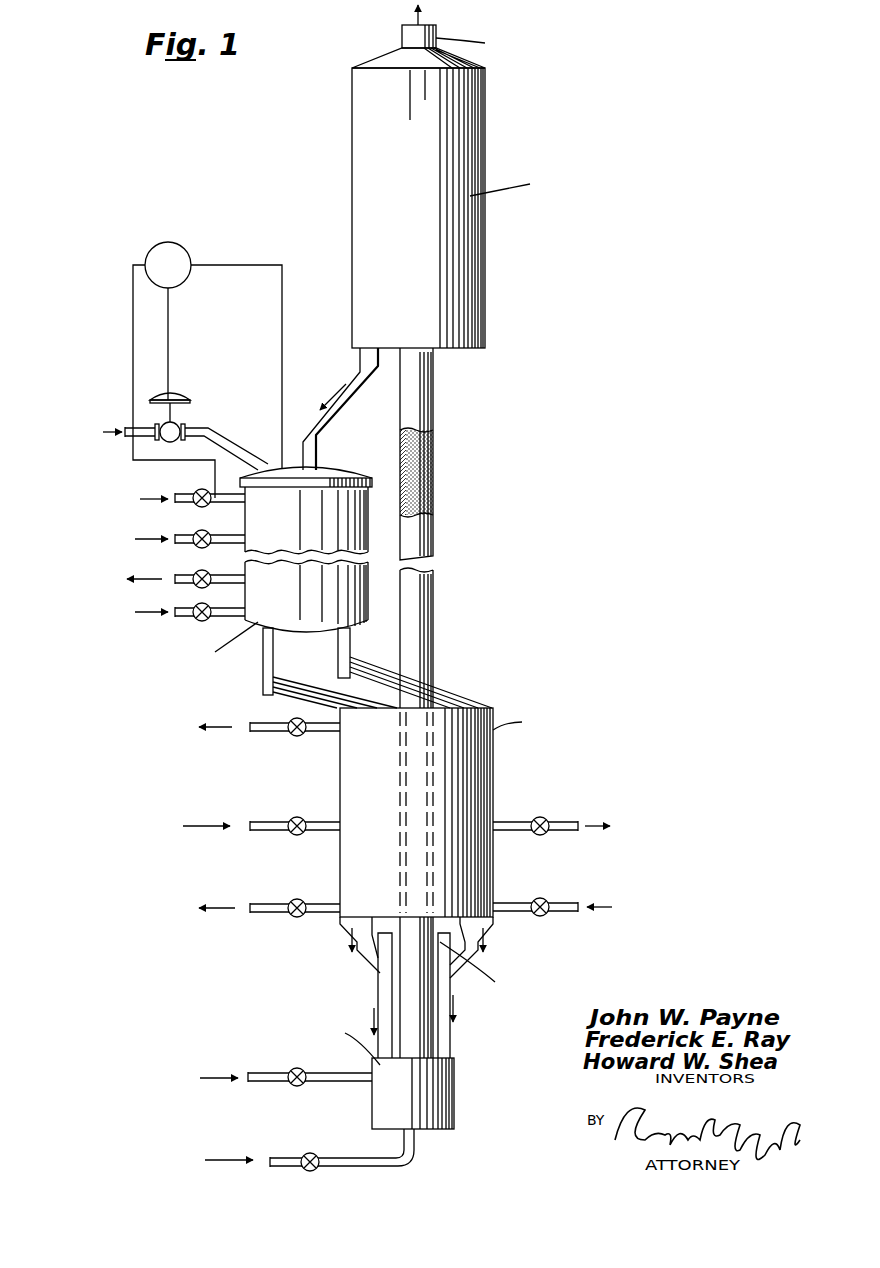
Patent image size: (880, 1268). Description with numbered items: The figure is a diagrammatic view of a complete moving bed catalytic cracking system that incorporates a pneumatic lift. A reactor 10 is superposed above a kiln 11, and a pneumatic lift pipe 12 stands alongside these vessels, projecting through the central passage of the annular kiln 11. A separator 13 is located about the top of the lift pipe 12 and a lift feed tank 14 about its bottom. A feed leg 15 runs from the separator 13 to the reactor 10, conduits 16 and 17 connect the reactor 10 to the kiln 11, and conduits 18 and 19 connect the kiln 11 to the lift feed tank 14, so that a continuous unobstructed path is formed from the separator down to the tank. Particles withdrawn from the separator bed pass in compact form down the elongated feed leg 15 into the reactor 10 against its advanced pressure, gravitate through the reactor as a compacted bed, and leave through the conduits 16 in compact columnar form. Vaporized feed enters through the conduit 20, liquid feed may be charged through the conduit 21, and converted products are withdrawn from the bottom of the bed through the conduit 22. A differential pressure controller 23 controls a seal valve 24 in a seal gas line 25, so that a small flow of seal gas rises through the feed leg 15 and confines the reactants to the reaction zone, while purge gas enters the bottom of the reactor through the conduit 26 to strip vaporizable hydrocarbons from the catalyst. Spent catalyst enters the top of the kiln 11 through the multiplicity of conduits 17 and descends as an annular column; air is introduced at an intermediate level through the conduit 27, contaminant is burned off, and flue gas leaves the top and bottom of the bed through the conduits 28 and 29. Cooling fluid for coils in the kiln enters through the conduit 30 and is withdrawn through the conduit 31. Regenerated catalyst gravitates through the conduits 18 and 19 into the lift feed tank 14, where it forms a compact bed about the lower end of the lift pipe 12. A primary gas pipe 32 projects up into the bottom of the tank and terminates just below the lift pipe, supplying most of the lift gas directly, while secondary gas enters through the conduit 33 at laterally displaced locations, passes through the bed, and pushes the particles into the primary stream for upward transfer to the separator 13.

The reactor 10 is at (247, 566).
The kiln 11 is at (478, 781).
The pneumatic lift pipe 12 is at (415, 604).
The separator 13 is at (462, 314).
The lift feed tank 14 is at (440, 1110).
The feed leg 15 is at (322, 428).
The conduits 16 is at (262, 663).
The conduits 17 is at (287, 688).
The conduits 18 is at (373, 962).
The conduits 19 is at (378, 998).
The conduit 20 is at (185, 504).
The conduit 21 is at (183, 543).
The conduit 22 is at (187, 584).
The differential pressure controller 23 is at (176, 242).
The seal valve 24 is at (188, 403).
The seal gas line 25 is at (226, 440).
The conduit 26 is at (187, 617).
The conduit 27 is at (255, 832).
The conduit 28 is at (258, 733).
The conduit 29 is at (255, 915).
The conduit 30 is at (510, 900).
The conduit 31 is at (510, 822).
The primary gas pipe 32 is at (347, 1158).
The conduit 33 is at (258, 1085).